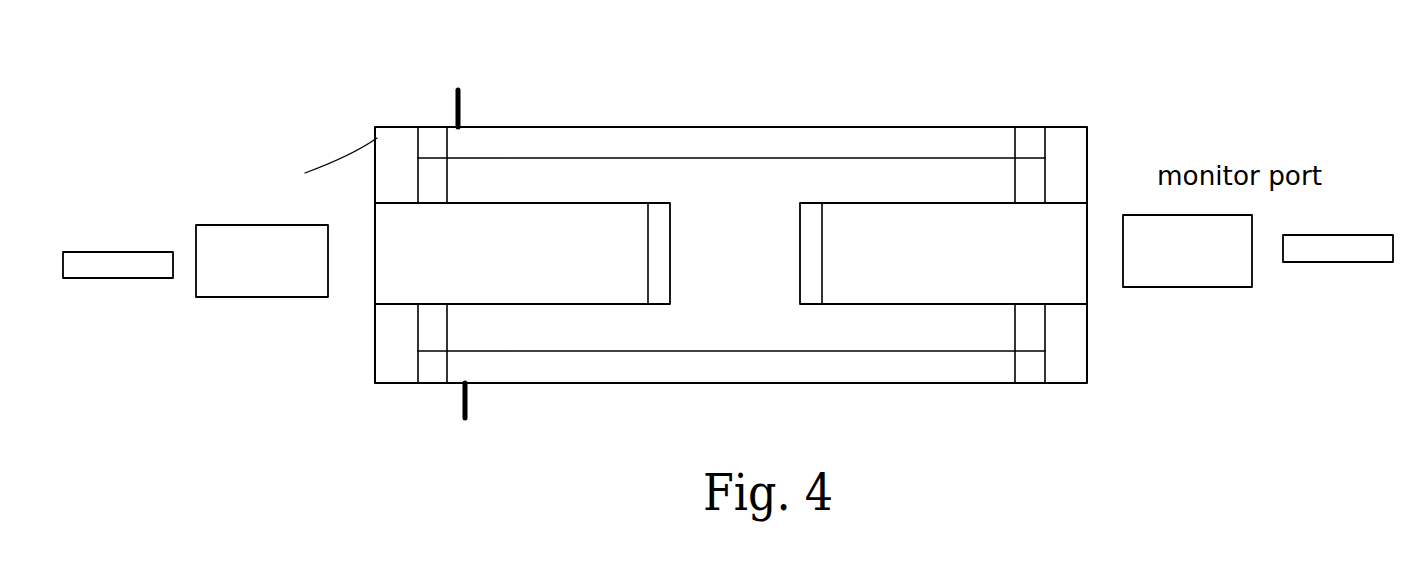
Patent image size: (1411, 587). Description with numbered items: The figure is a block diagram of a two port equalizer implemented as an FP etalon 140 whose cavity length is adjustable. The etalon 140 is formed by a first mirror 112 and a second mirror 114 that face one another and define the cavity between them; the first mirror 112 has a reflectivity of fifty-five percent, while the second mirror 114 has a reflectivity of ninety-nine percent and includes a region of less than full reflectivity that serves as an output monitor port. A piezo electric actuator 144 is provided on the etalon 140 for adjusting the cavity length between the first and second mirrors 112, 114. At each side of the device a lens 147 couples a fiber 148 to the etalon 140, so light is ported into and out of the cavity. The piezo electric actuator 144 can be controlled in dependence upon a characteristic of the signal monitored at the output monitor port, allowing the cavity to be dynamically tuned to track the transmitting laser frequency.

The FP etalon 140 is at (908, 66).
The piezo electric actuator 144 is at (577, 125).
The first mirror 112 is at (653, 305).
The second mirror 114 is at (805, 303).
The lens 147 is at (282, 298).
The fiber 148 is at (123, 279).